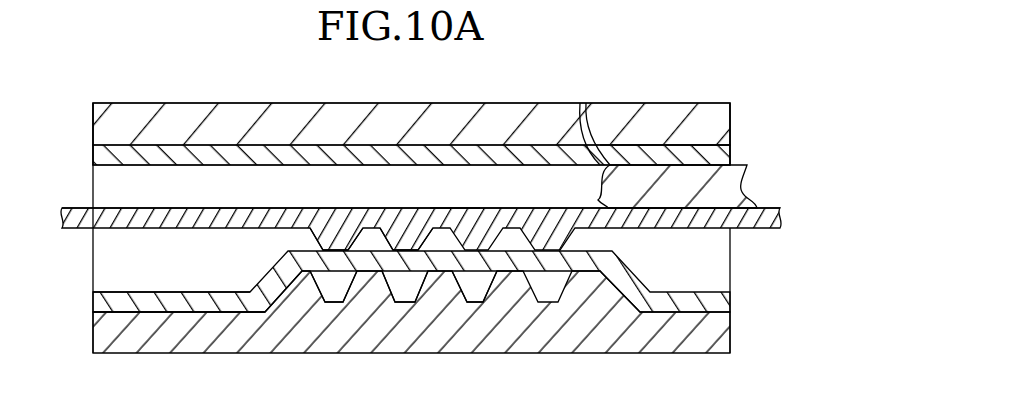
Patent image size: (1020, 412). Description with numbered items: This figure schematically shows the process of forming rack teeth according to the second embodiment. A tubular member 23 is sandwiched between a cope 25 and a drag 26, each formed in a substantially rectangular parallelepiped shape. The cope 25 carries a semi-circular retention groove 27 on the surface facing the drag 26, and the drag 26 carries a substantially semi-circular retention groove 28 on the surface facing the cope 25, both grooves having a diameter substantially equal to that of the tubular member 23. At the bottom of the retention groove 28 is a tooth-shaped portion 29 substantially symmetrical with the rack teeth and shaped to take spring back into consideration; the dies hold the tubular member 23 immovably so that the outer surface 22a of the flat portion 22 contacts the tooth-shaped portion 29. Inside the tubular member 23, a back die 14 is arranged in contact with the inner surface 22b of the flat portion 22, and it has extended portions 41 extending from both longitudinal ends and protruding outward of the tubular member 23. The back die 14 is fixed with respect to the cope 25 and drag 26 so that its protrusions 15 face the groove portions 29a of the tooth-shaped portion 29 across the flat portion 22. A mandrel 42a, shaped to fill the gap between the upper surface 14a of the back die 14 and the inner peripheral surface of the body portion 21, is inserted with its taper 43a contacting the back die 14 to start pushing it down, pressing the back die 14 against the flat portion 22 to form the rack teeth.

The cope 25 is at (102, 111).
The retention groove 27 is at (206, 147).
The body portion 21 is at (385, 150).
The tubular member 23 is at (730, 144).
The taper 43a is at (583, 103).
The mandrel 42a is at (741, 186).
The extended portion 41 is at (66, 232).
The back die 14 is at (537, 207).
The upper surface of the back die 14a is at (452, 207).
The inner surface of the flat portion 22b is at (362, 247).
The protrusion 15 is at (408, 243).
The flat portion 22 is at (588, 266).
The retention groove 28 is at (191, 306).
The drag 26 is at (105, 333).
The outer surface of the flat portion 22a is at (333, 276).
The groove portion 29a is at (405, 302).
The tooth-shaped portion 29 is at (452, 285).